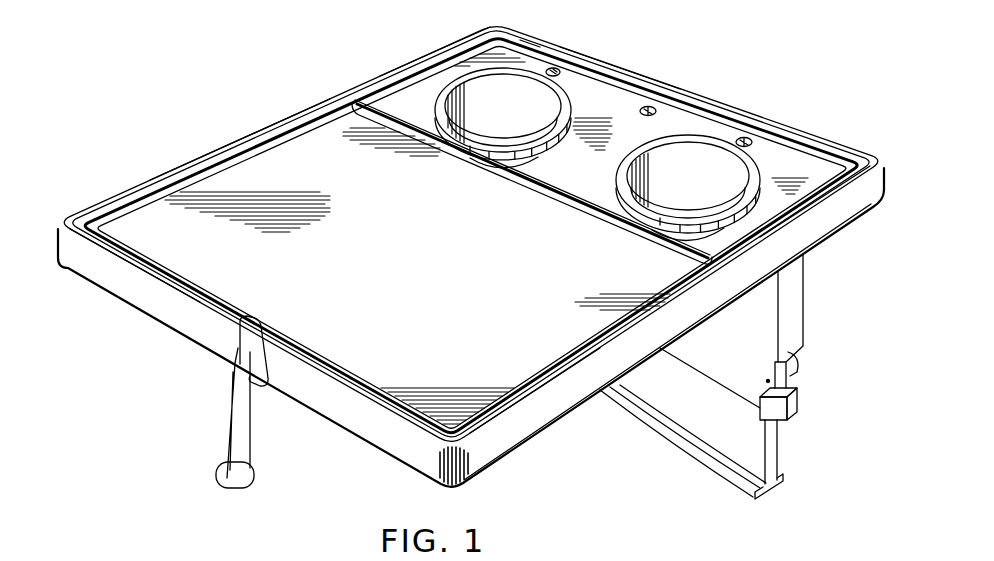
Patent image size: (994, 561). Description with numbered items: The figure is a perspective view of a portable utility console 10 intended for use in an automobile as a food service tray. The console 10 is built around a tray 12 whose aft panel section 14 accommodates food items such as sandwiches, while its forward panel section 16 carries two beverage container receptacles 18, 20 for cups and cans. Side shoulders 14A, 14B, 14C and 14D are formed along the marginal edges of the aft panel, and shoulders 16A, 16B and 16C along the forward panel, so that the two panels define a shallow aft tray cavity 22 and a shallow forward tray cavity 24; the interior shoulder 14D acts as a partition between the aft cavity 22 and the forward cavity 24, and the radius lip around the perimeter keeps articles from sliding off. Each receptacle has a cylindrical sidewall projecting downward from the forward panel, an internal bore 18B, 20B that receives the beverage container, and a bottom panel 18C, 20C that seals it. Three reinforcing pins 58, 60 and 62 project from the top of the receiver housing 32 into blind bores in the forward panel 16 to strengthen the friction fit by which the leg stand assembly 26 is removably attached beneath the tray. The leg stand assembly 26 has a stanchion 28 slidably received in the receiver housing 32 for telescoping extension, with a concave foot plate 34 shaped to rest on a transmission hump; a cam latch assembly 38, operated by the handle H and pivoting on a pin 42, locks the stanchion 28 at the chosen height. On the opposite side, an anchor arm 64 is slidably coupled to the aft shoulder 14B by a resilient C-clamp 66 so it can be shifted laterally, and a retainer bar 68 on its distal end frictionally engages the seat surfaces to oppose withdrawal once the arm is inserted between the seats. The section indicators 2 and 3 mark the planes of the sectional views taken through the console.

The portable utility console 10 is at (312, 72).
The tray 12 is at (213, 146).
The aft panel section 14 is at (384, 290).
The side shoulder 14A is at (290, 122).
The aft shoulder 14B is at (93, 279).
The side shoulder 14C is at (518, 413).
The interior shoulder 14D is at (553, 193).
The forward panel section 16 is at (636, 136).
The side shoulder 16A is at (447, 52).
The side shoulder 16B is at (642, 78).
The side shoulder 16C is at (792, 230).
The beverage container receptacle 18 is at (535, 46).
The internal bore 18B is at (553, 112).
The bottom panel 18C is at (497, 144).
The beverage container receptacle 20 is at (762, 148).
The internal bore 20B is at (745, 174).
The bottom panel 20C is at (660, 230).
The aft tray cavity 22 is at (155, 215).
The forward tray cavity 24 is at (532, 68).
The leg stand assembly 26 is at (808, 318).
The stanchion 28 is at (733, 438).
The receiver housing 32 is at (713, 353).
The concave foot plate 34 is at (782, 472).
The cam latch assembly 38 is at (805, 375).
The pin 42 is at (767, 380).
The cam latch handle H is at (798, 410).
The reinforcing pin 58 is at (563, 70).
The reinforcing pin 60 is at (648, 108).
The reinforcing pin 62 is at (745, 140).
The anchor arm 64 is at (238, 421).
The resilient C-clamp 66 is at (248, 318).
The retainer bar 68 is at (245, 487).
The section line 2- 2 is at (700, 172).
The section line 3- 3 is at (597, 160).